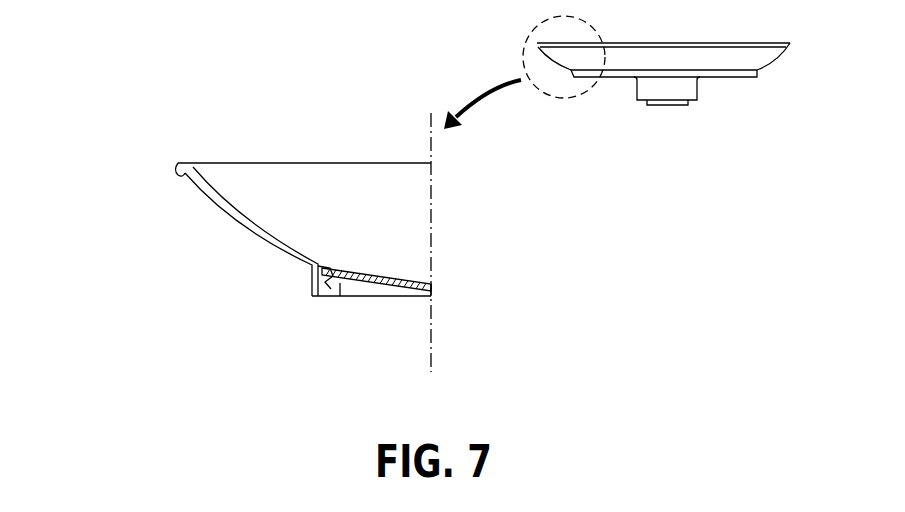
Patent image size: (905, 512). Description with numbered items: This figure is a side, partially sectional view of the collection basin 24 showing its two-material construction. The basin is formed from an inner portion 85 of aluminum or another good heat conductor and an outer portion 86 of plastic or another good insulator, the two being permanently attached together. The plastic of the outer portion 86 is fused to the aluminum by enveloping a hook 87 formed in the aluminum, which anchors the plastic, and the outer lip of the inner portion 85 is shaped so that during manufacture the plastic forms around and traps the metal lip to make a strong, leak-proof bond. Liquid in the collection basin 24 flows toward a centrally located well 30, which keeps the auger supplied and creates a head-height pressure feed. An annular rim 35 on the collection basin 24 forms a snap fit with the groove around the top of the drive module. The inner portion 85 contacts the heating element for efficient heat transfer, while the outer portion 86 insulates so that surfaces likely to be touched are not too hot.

The collection basin 24 is at (780, 62).
The well 30 is at (704, 90).
The annular rim 35 is at (329, 305).
The inner portion 85 is at (401, 278).
The outer portion 86 is at (260, 246).
The hook 87 is at (315, 295).